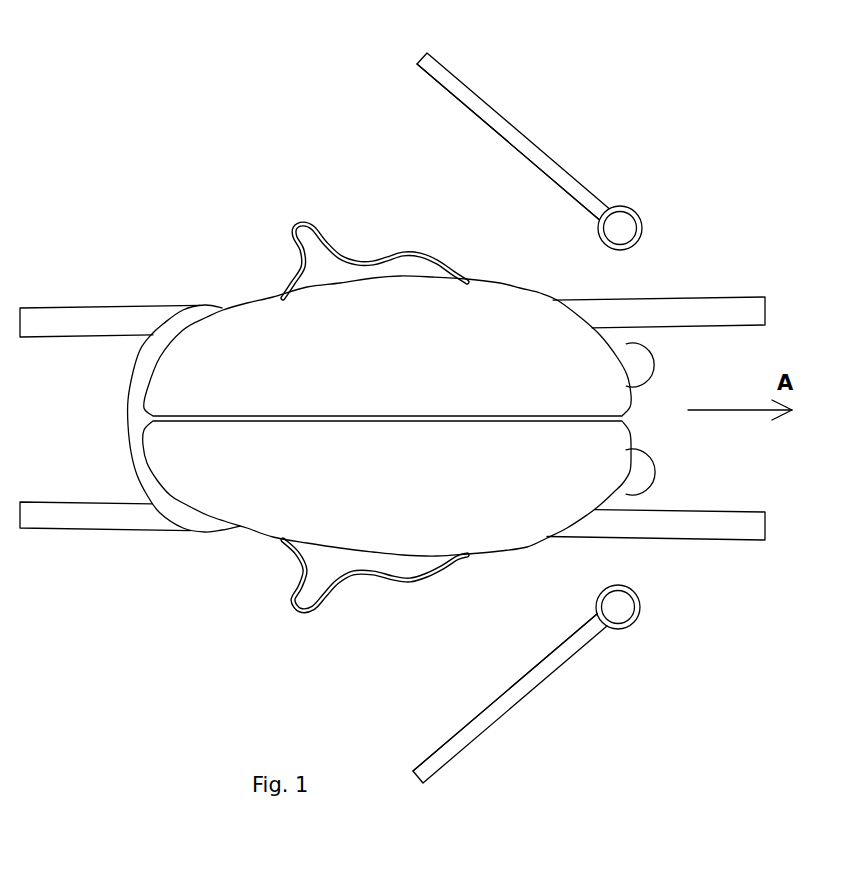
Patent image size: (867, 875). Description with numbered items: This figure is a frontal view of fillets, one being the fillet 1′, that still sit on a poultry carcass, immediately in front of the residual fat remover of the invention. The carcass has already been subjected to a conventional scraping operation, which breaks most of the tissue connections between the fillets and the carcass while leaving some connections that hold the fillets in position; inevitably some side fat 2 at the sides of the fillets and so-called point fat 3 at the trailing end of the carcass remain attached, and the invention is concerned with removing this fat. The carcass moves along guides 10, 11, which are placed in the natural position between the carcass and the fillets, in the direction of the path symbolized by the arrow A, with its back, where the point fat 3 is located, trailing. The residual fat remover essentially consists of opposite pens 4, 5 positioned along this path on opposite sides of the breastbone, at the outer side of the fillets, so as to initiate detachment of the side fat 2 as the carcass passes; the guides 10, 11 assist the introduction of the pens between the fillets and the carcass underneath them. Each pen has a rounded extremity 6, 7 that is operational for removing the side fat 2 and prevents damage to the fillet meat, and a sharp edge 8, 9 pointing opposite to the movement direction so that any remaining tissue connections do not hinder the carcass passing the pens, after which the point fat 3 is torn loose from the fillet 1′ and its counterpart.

The fillet 1′ is at (526, 312).
The side fat 2 is at (350, 231).
The point fat 3 is at (128, 428).
The pen 4 is at (531, 693).
The pen 5 is at (486, 89).
The rounded extremity 6 is at (648, 595).
The rounded extremity 7 is at (649, 218).
The sharp edge 8 is at (477, 707).
The sharp edge 9 is at (476, 128).
The guide 10 is at (694, 503).
The guide 11 is at (693, 328).